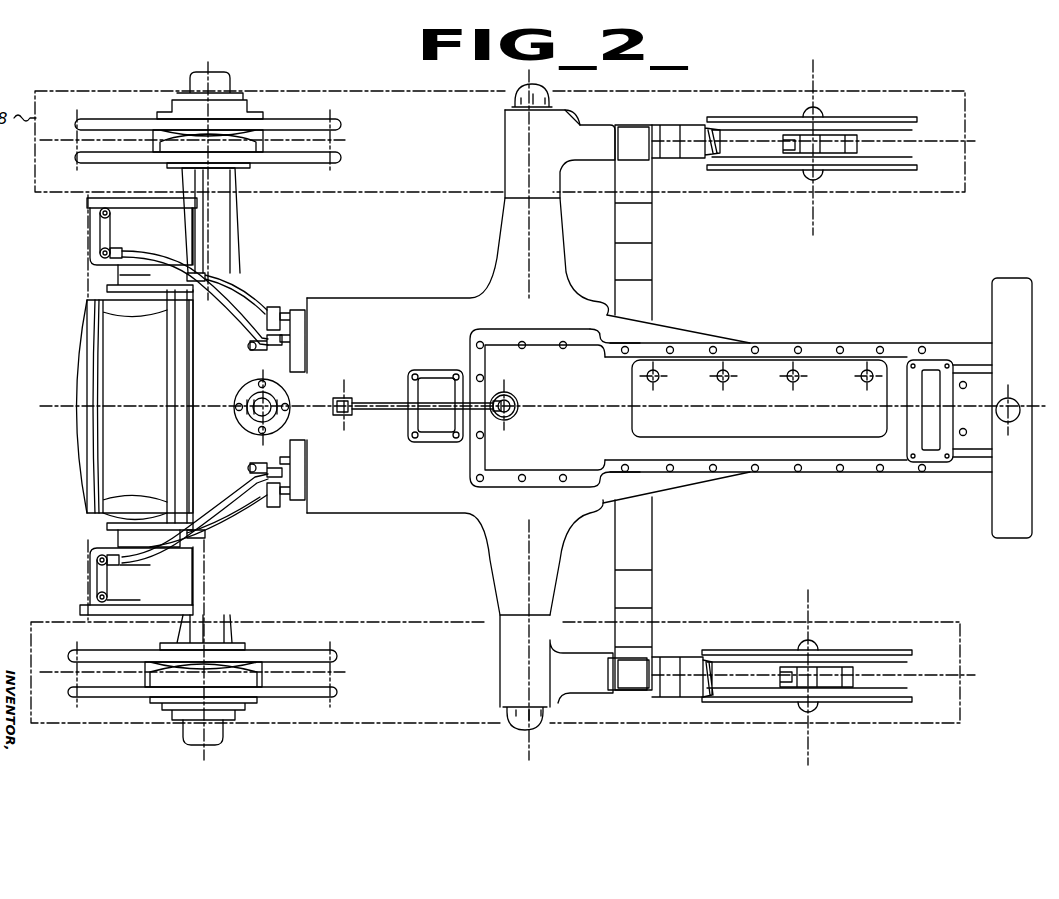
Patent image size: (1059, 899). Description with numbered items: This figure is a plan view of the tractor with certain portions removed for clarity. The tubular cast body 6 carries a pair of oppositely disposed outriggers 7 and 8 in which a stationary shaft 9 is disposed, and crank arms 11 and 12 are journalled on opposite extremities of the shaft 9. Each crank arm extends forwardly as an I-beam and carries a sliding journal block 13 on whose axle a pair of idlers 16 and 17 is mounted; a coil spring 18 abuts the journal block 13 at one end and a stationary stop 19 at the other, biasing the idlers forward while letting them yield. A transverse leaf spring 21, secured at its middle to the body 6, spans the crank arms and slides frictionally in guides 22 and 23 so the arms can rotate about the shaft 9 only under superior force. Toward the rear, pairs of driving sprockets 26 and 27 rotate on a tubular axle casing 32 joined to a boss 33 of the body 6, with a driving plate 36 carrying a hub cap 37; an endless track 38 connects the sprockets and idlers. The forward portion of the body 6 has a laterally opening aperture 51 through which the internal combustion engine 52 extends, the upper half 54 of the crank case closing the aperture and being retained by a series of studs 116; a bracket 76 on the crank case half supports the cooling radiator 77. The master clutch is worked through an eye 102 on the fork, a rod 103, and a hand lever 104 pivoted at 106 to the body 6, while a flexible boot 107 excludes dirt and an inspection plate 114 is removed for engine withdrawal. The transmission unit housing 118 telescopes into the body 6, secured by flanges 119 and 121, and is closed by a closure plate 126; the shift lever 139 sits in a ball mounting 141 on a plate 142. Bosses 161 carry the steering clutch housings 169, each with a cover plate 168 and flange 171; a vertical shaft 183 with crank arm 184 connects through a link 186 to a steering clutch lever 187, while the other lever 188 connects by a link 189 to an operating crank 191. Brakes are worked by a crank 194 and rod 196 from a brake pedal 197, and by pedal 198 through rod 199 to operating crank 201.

The body 6 is at (440, 515).
The outrigger 7 is at (500, 253).
The outrigger 8 is at (500, 582).
The stationary shaft 9 is at (550, 95).
The crank arm 11 is at (598, 130).
The crank arm 12 is at (603, 692).
The sliding journal block 13 is at (830, 660).
The idler 16 is at (912, 657).
The idler 17 is at (912, 695).
The coil spring 18 is at (712, 668).
The stationary stop 19 is at (690, 660).
The transverse leaf spring 21 is at (652, 548).
The guide 22 is at (660, 158).
The guide 23 is at (655, 657).
The driving sprocket 26 is at (341, 124).
The driving sprocket 27 is at (341, 157).
The axle casing 32 is at (217, 218).
The boss 33 is at (240, 522).
The driving plate 36 is at (238, 708).
The hub cap 37 is at (212, 735).
The endless chain or track 38 is at (378, 722).
The laterally opening aperture 51 is at (725, 475).
The internal combustion engine 52 is at (818, 370).
The upper half of the crank case 54 is at (616, 407).
The bracket 76 is at (978, 470).
The cooling radiator 77 is at (995, 512).
The eye 102 is at (510, 414).
The rod 103 is at (405, 418).
The hand lever 104 is at (345, 418).
The pivot 106 is at (355, 395).
The flexible boot 107 is at (508, 398).
The inspection plate 114 is at (412, 380).
The studs 116 is at (522, 345).
The transmission unit housing 118 is at (115, 447).
The flange 119 is at (167, 378).
The flange 121 is at (175, 394).
The closure plate 126 is at (72, 378).
The shift lever 139 is at (249, 405).
The ball mounting 141 is at (249, 420).
The plate 142 is at (247, 392).
The boss 161 is at (110, 517).
The cover plate 168 is at (82, 608).
The steering clutch housing 169 is at (100, 214).
The flange 171 is at (110, 531).
The vertical shaft 183 is at (132, 606).
The crank arm 184 is at (97, 578).
The link 186 is at (163, 553).
The steering clutch lever 187 is at (250, 468).
The steering clutch lever 188 is at (250, 346).
The link 189 is at (232, 300).
The operating crank 191 is at (100, 236).
The crank 194 is at (212, 548).
The rod 196 is at (272, 507).
The brake pedal 197 is at (298, 497).
The brake pedal 198 is at (318, 304).
The rod 199 is at (279, 298).
The operating crank 201 is at (200, 282).